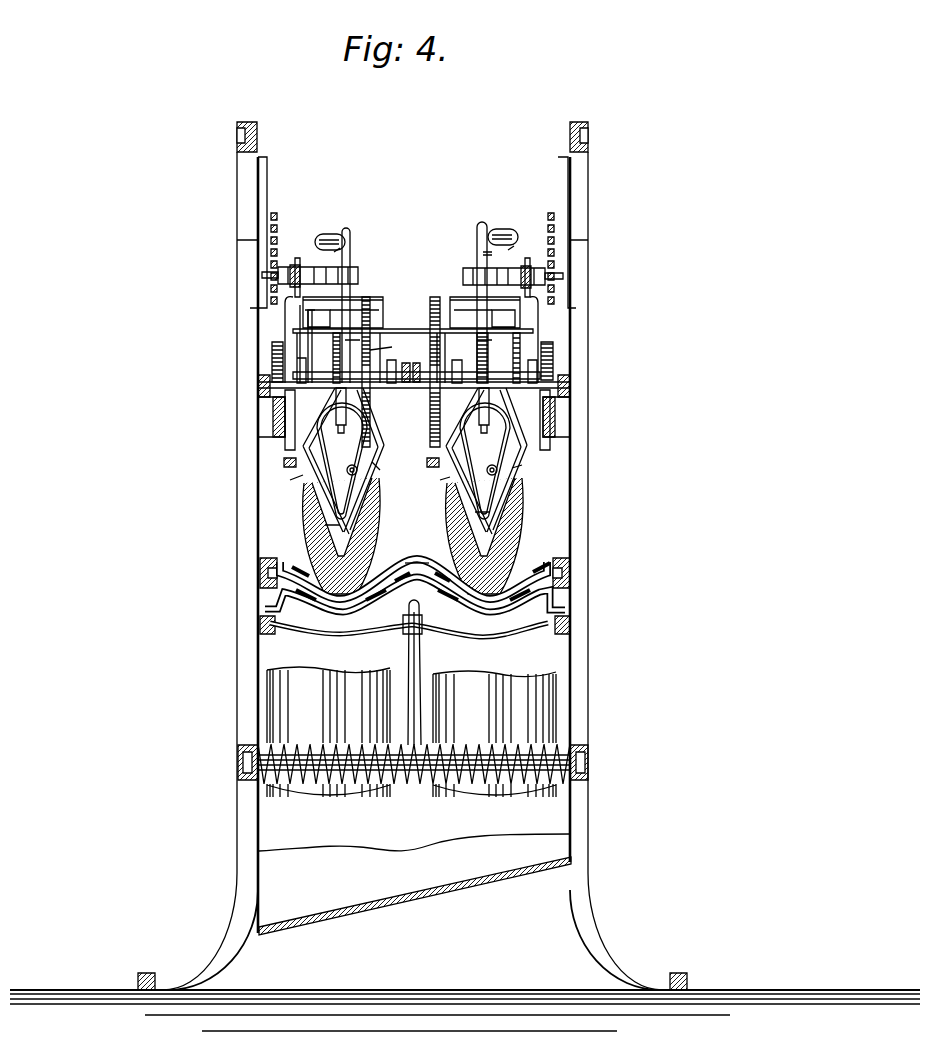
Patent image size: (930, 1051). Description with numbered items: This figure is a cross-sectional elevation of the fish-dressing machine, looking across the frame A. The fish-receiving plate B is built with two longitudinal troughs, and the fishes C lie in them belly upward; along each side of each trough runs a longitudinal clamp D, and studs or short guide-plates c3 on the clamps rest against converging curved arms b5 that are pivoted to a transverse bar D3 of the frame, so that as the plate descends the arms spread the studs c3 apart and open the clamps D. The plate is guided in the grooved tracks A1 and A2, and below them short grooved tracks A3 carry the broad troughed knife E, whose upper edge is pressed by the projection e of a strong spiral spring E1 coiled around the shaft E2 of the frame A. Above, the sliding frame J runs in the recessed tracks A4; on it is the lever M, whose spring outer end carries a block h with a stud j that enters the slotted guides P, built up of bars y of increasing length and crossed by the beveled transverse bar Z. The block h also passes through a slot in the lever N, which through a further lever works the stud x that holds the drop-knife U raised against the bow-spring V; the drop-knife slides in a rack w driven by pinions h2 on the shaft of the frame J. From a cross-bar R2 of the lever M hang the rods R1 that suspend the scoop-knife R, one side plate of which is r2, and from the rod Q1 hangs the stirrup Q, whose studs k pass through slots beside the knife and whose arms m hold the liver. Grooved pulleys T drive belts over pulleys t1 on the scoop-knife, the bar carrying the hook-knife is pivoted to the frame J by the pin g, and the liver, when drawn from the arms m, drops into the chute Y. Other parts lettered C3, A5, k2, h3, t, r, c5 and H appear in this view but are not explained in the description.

The frame A is at (590, 518).
The cap C3 is at (412, 125).
The transverse bar Z is at (558, 176).
The bars y is at (273, 222).
The longitudinally-slotted guides P is at (596, 250).
The stud or pin j is at (572, 286).
The lever M is at (516, 272).
The lever N is at (527, 262).
The block h is at (296, 262).
The drop-knife U is at (478, 232).
The chute Y is at (504, 230).
The rack w is at (484, 253).
The stud x is at (430, 252).
The cross-bar R2 is at (458, 298).
The bars or rods R1 is at (402, 330).
The stirrup Q is at (414, 414).
The rod Q1 is at (420, 347).
The grooved pulleys T is at (438, 305).
The sliding frame J is at (404, 329).
The studs k is at (520, 360).
The rack k2 is at (426, 358).
The pin g is at (385, 344).
The pinions h2 is at (405, 362).
The block h3 is at (417, 362).
The gear t is at (556, 356).
The horizontally-recessed tracks A4 is at (596, 382).
The bracket A5 is at (414, 417).
The bow-spring V is at (413, 414).
The fish C is at (415, 491).
The arms m is at (360, 466).
The pipe r is at (451, 467).
The sharp-edged plate r2 is at (366, 485).
The grooved pulleys t1 is at (430, 466).
The scoop-knife R is at (408, 503).
The track A2 is at (260, 560).
The track A1 is at (260, 586).
The longitudinal clamps D is at (312, 565).
The fish-receiving plate B is at (417, 551).
The transverse bar D3 is at (415, 598).
The studs or short guide-plates c3 is at (292, 566).
The clip c5 is at (422, 584).
The converging curved arms b5 is at (380, 595).
The horizontally-grooved track A3 is at (596, 627).
The broad knife E is at (409, 637).
The projection e is at (417, 675).
The spiral spring E1 is at (355, 782).
The shaft E2 is at (412, 782).
The tank H is at (415, 884).